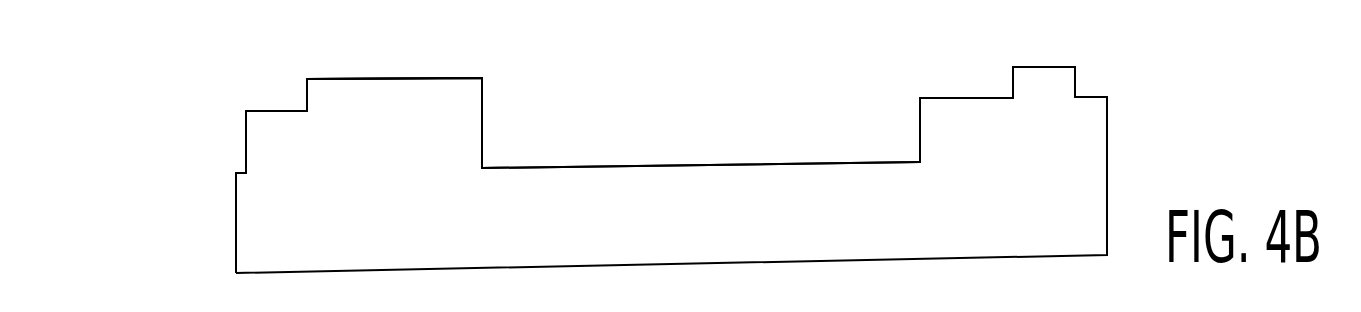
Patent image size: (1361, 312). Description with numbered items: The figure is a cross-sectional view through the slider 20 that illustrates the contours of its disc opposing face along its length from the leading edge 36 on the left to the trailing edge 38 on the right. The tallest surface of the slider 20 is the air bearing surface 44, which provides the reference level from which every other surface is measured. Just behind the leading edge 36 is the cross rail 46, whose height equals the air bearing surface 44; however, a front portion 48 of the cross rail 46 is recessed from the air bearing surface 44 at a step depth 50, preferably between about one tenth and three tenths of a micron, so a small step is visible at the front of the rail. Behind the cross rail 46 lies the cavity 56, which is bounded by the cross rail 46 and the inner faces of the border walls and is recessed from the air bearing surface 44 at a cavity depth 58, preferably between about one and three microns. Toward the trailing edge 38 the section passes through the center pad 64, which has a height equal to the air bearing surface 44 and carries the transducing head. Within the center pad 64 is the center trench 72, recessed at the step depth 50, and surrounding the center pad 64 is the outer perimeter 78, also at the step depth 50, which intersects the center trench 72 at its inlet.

The slider 20 is at (415, 279).
The leading edge 36 is at (233, 200).
The trailing edge 38 is at (1107, 128).
The air bearing surface 44 is at (447, 75).
The cross rail 46 is at (370, 103).
The front portion of cross rail 48 is at (257, 137).
The step depth 50 is at (292, 110).
The cavity 56 is at (701, 157).
The cavity depth 58 is at (519, 77).
The center pad 64 is at (1050, 75).
The center trench 72 is at (978, 88).
The outer perimeter 78 is at (1095, 93).